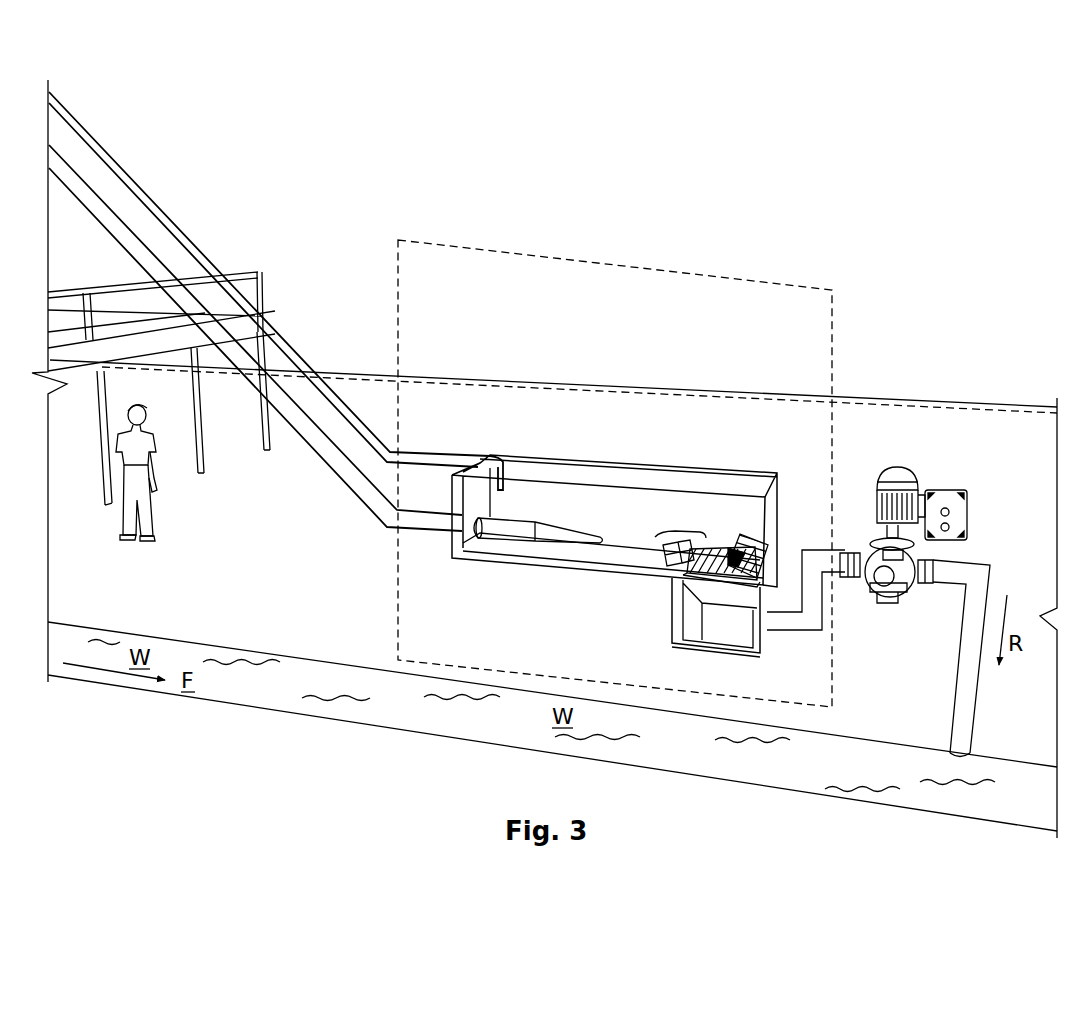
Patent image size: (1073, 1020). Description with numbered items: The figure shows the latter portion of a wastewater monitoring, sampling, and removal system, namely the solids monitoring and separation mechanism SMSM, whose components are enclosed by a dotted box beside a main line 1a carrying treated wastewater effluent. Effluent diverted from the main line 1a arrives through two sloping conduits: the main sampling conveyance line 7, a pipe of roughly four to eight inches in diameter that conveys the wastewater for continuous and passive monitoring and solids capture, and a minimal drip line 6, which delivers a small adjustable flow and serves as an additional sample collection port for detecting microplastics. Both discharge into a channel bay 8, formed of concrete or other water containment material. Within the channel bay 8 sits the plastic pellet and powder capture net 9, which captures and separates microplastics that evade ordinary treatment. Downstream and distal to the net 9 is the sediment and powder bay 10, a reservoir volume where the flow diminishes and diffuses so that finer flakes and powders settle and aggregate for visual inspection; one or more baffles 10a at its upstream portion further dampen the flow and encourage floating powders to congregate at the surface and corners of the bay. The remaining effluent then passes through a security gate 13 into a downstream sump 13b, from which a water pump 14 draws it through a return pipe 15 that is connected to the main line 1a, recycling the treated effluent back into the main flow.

The main line 1a is at (272, 707).
The minimal drip line 6 is at (300, 343).
The main sampling conveyance line 7 is at (305, 448).
The channel bay 8 is at (578, 582).
The plastic pellet and powder capture net 9 is at (538, 514).
The sediment and powder bay 10 is at (700, 525).
The baffles 10a is at (676, 557).
The security gate 13 is at (746, 526).
The downstream sump 13b is at (738, 648).
The water pump 14 is at (903, 462).
The return pipe 15 is at (992, 578).
The solids monitoring and separation mechanism SMSM is at (832, 347).